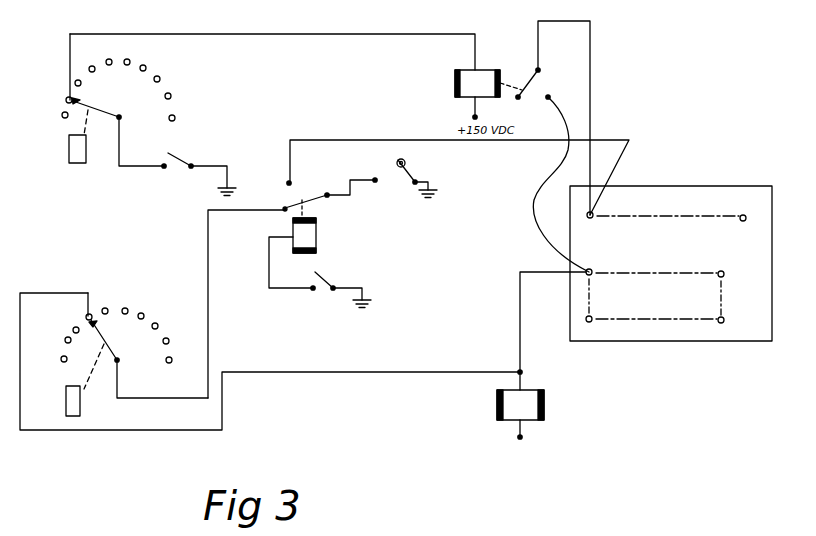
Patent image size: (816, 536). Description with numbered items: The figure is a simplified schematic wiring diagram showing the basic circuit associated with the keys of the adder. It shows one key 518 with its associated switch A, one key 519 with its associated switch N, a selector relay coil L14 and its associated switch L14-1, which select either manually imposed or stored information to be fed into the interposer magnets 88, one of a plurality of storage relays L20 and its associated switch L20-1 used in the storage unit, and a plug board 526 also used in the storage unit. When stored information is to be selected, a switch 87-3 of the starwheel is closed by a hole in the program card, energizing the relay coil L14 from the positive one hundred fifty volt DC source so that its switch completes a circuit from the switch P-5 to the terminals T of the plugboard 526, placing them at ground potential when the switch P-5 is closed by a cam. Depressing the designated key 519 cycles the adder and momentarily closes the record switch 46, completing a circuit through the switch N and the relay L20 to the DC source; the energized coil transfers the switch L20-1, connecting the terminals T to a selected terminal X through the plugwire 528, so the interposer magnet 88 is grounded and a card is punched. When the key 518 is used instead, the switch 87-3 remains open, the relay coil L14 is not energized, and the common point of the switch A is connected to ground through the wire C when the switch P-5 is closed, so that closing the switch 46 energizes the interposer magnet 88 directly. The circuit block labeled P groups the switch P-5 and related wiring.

The key 519 is at (76, 163).
The key 518 is at (80, 401).
The record switch 46 is at (185, 166).
The wire C is at (208, 300).
The circuit block P is at (359, 141).
The switch L14-1 is at (300, 192).
The selector relay coil L14 is at (316, 237).
The switch 87-3 is at (324, 278).
The switch P-5 is at (420, 177).
The storage relay L20 is at (460, 92).
The switch L20-1 is at (531, 81).
The plugwire 528 is at (590, 82).
The plug board 526 is at (733, 193).
The terminals T is at (614, 214).
The terminal X is at (593, 266).
The interposer magnet 88 is at (533, 415).